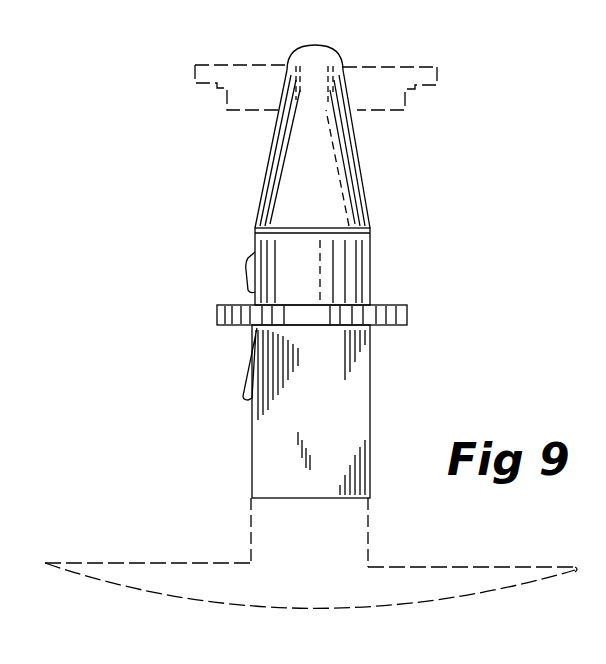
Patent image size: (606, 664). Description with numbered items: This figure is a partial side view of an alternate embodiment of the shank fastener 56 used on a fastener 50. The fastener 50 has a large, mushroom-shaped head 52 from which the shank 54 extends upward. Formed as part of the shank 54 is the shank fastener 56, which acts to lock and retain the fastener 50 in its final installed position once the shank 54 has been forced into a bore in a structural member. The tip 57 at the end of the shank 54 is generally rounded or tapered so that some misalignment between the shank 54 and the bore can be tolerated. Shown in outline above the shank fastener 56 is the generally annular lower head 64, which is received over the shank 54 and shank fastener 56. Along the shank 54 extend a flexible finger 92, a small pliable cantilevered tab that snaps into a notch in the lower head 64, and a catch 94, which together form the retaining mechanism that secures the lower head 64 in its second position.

The fastener 50 is at (242, 179).
The mushroom-shaped head 52 is at (167, 603).
The shank 54 is at (370, 383).
The shank fastener 56 is at (236, 263).
The tip 57 is at (320, 52).
The lower head 64 is at (208, 65).
The flexible finger 92 is at (248, 290).
The catch 94 is at (244, 402).